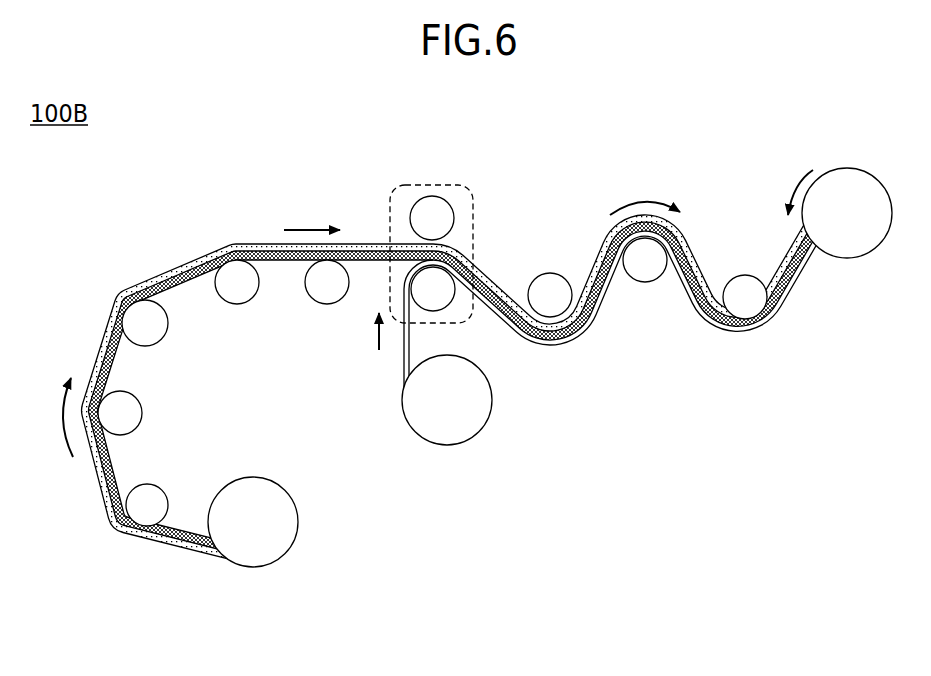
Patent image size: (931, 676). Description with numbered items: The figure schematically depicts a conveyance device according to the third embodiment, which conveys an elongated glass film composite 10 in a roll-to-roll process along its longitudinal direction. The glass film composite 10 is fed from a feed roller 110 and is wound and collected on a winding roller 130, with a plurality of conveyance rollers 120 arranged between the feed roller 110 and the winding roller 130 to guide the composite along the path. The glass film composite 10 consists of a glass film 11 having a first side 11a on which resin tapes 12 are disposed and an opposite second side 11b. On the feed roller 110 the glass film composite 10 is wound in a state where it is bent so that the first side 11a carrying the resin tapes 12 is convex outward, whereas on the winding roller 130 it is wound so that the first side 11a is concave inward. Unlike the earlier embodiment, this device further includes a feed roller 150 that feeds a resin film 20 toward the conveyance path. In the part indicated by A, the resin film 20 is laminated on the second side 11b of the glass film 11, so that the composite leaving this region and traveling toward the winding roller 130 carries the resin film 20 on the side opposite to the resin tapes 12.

The glass film composite 10 is at (459, 427).
The glass film 11 is at (459, 407).
The first side 11a is at (187, 262).
The second side 11b is at (185, 282).
The resin tapes 12 is at (195, 553).
The resin film 20 is at (402, 362).
The feed roller 110 is at (255, 560).
The conveyance rollers 120 is at (142, 320).
The winding roller 130 is at (847, 190).
The feed roller 150 is at (447, 425).
The lamination part A is at (433, 183).